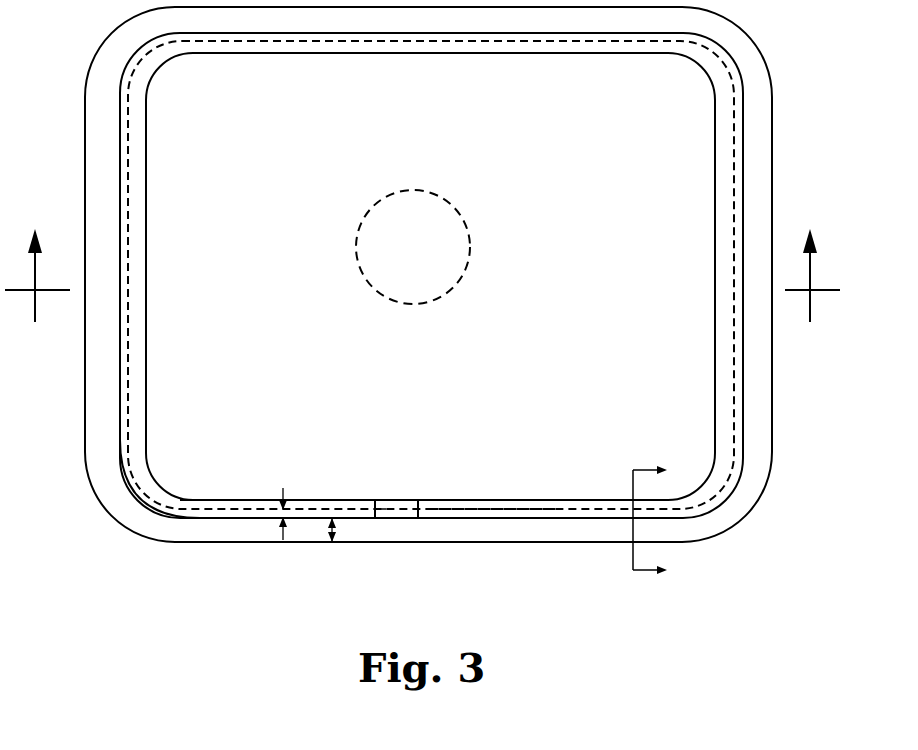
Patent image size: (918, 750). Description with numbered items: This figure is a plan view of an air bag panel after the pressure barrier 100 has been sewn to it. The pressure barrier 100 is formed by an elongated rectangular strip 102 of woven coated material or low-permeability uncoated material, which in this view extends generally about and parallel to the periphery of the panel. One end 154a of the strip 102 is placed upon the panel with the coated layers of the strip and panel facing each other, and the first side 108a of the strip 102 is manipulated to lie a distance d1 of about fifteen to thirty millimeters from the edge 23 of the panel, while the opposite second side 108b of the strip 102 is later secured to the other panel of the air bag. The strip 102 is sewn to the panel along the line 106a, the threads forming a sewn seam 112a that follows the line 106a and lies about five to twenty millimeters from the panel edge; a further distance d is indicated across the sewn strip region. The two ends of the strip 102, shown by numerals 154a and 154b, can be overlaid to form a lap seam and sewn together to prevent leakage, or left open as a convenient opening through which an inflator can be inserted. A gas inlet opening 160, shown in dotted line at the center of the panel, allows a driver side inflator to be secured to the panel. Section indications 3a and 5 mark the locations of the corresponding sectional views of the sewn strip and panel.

The pressure barrier 100 is at (266, 478).
The strip 102 is at (448, 505).
The line 106a is at (140, 495).
The first side 108a is at (745, 220).
The second side 108b is at (713, 208).
The sewn seam 112a is at (490, 512).
The end of strip 154a is at (379, 500).
The end of strip 154b is at (398, 505).
The opening 160 is at (423, 213).
The edge of panel 23 is at (470, 542).
The section line 5 is at (425, 275).
The section line 3a is at (650, 523).
The distance d is at (285, 523).
The distance d1 is at (336, 526).